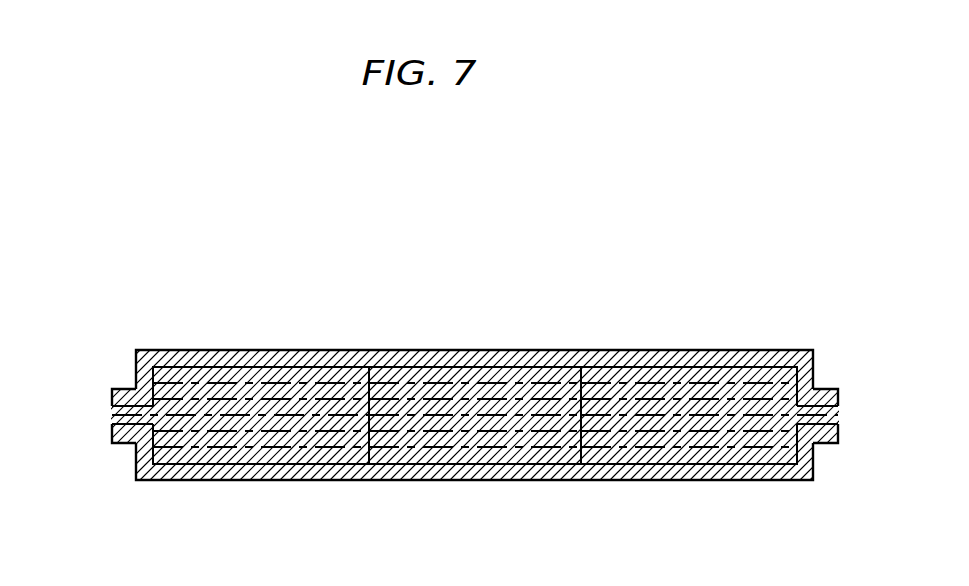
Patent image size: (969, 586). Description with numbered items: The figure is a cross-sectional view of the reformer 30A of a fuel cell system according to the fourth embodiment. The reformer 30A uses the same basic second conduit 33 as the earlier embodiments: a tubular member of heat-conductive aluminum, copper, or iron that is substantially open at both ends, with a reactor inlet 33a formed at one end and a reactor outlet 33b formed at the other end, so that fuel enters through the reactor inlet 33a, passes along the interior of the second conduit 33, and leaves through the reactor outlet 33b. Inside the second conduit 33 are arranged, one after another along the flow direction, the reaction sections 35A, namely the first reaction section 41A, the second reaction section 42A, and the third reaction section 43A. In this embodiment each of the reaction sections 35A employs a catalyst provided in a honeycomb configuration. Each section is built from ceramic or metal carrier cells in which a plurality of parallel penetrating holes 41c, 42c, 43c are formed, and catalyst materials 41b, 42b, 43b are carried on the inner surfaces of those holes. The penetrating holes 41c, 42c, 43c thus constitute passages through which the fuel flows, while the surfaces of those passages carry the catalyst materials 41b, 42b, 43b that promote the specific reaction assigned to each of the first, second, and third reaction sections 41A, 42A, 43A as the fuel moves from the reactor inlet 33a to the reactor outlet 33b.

The reformer 30A is at (797, 287).
The second conduit 33 is at (398, 470).
The reactor inlet 33a is at (112, 413).
The reactor outlet 33b is at (838, 413).
The reaction sections 35A is at (698, 265).
The first reaction section 41A is at (260, 364).
The catalyst material 41b is at (316, 432).
The penetrating holes 41c is at (245, 423).
The second reaction section 42A is at (475, 364).
The catalyst material 42b is at (521, 433).
The penetrating holes 42c is at (459, 423).
The third reaction section 43A is at (688, 364).
The catalyst material 43b is at (710, 430).
The penetrating holes 43c is at (650, 422).